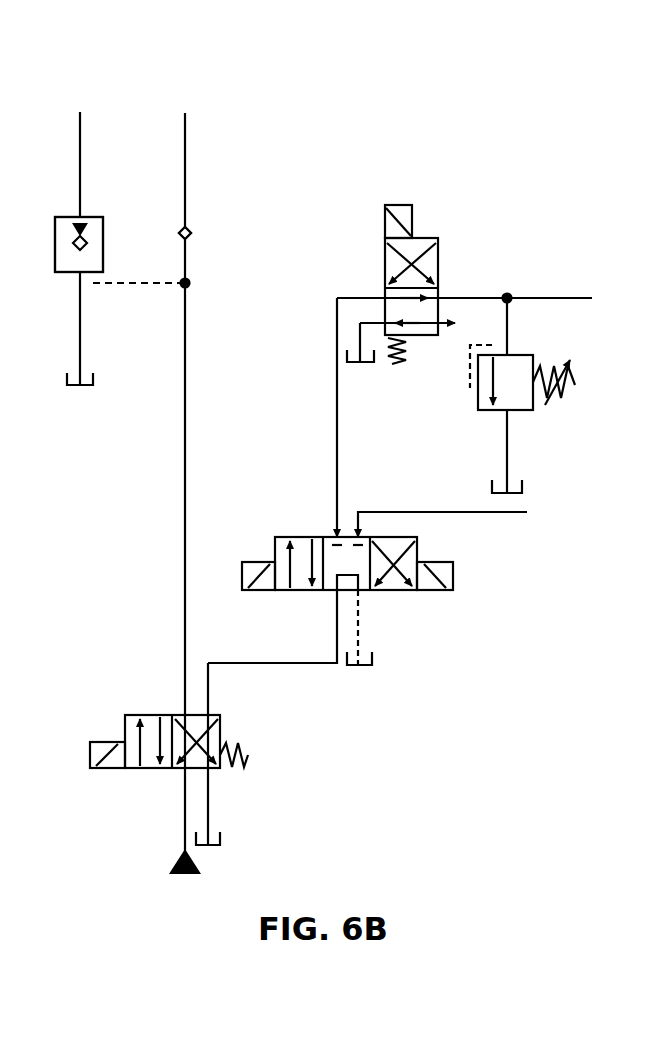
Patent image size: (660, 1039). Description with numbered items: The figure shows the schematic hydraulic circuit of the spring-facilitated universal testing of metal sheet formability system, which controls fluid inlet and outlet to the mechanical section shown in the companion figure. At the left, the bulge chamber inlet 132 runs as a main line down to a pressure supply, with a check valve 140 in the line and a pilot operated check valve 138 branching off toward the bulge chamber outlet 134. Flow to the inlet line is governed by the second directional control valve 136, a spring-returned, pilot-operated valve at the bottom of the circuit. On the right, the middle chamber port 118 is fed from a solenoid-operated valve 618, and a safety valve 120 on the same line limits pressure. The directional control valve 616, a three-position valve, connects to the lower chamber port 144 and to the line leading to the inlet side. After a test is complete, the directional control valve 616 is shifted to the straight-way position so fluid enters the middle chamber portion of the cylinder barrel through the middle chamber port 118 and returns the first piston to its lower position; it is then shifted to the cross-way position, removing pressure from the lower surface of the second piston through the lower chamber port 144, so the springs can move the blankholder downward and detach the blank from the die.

The middle chamber port 118 is at (489, 413).
The safety valve 120 is at (518, 410).
The bulge chamber inlet 132 is at (178, 479).
The bulge chamber outlet 134 is at (120, 235).
The second directional control valve 136 is at (245, 760).
The pilot operated check valve 138 is at (65, 217).
The check valve 140 is at (200, 224).
The lower chamber port 144 is at (469, 520).
The directional control valve 616 is at (413, 590).
The solenoid operated valve 618 is at (438, 260).